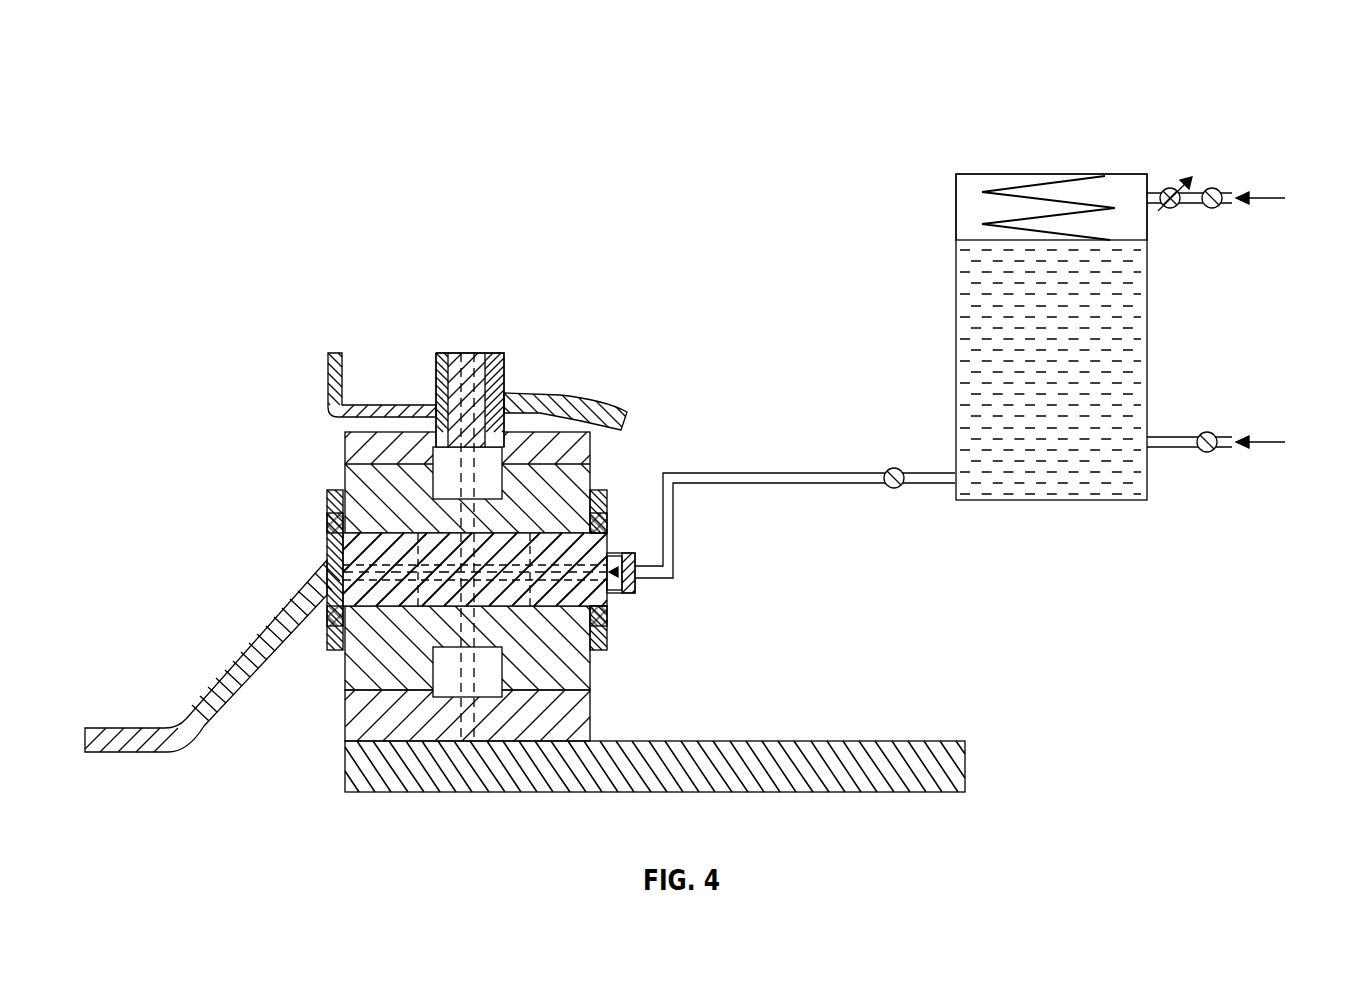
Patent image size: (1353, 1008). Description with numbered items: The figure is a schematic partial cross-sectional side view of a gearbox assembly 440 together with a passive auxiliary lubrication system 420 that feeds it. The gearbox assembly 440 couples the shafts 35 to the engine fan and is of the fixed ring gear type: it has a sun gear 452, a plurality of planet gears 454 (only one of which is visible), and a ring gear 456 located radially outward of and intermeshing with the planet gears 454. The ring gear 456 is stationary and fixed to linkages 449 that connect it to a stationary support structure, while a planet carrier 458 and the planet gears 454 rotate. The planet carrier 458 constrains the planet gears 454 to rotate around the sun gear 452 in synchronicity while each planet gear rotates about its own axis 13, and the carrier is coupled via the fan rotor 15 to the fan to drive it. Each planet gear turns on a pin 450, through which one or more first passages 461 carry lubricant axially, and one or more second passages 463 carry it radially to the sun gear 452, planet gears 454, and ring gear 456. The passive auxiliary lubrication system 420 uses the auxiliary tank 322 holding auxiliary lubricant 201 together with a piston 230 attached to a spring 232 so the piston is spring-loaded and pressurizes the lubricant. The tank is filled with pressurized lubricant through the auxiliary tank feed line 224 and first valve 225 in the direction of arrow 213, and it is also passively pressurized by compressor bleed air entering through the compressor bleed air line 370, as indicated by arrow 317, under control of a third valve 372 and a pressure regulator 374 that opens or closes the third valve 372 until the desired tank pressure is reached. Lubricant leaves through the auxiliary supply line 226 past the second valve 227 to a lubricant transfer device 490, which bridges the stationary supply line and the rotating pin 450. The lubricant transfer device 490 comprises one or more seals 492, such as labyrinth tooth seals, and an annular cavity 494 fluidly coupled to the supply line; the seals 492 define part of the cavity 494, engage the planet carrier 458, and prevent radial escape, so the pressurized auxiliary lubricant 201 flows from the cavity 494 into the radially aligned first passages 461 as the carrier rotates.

The gearbox assembly 440 is at (178, 157).
The linkages 449 is at (440, 352).
The ring gear 456 is at (410, 432).
The plurality of planet gears 454 is at (345, 462).
The pin 450 is at (345, 500).
The planet carrier 458 is at (327, 540).
The second passages 463 is at (482, 447).
The first passages 461 is at (608, 492).
The sun gear 452 is at (350, 700).
The fan rotor 15 is at (102, 727).
The axis 13 is at (556, 540).
The shafts 35 is at (880, 792).
The lubricant transfer device 490 is at (636, 590).
The seals 492 is at (620, 555).
The cavity 494 is at (636, 567).
The passive auxiliary lubrication system 420 is at (1152, 59).
The auxiliary supply line 226 is at (812, 472).
The second valve 227 is at (893, 468).
The auxiliary tank 322 is at (975, 173).
The piston 230 is at (970, 240).
The spring 232 is at (1025, 183).
The auxiliary lubricant 201 is at (963, 300).
The compressor bleed air line 370 is at (1197, 192).
The pressure regulator 374 is at (1170, 190).
The third valve 372 is at (1214, 188).
The arrow 317 is at (1265, 198).
The auxiliary tank feed line 224 is at (1170, 435).
The first valve 225 is at (1205, 432).
The arrow 213 is at (1265, 443).